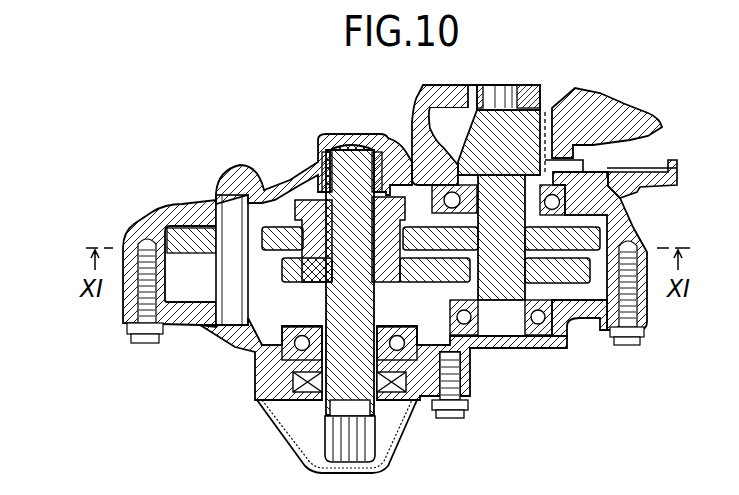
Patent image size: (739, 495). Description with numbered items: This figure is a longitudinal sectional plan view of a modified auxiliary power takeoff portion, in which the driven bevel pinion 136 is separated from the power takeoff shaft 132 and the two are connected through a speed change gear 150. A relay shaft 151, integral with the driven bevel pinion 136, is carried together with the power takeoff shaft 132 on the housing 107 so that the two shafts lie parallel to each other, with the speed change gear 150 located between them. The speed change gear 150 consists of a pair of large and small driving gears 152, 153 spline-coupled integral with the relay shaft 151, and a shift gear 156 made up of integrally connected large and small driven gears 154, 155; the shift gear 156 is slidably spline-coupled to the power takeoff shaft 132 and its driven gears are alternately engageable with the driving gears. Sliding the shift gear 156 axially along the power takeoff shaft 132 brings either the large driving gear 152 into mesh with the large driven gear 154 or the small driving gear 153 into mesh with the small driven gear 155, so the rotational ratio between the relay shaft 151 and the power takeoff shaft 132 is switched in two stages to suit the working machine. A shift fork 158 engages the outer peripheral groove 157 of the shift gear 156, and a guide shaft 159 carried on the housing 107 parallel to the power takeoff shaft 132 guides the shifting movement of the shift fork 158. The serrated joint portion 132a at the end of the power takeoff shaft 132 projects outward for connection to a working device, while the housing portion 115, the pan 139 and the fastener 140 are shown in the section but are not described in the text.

The housing 107 is at (421, 104).
The driven bevel pinion 136 is at (452, 137).
The upper housing portion 115 is at (613, 118).
The shift fork 158 is at (263, 193).
The small driven gear 155 is at (314, 180).
The guide shaft 159 is at (225, 203).
The relay shaft 151 is at (513, 229).
The small driving gear 153 is at (588, 235).
The outer peripheral groove 157 is at (303, 237).
The large driven gear 154 is at (306, 284).
The power takeoff shaft 132 is at (361, 335).
The shift gear 156 is at (396, 284).
The large driving gear 152 is at (566, 290).
The speed change gear 150 is at (558, 303).
The bolt 140 is at (466, 409).
The oil pan 139 is at (402, 420).
The joint portion 132a is at (368, 447).